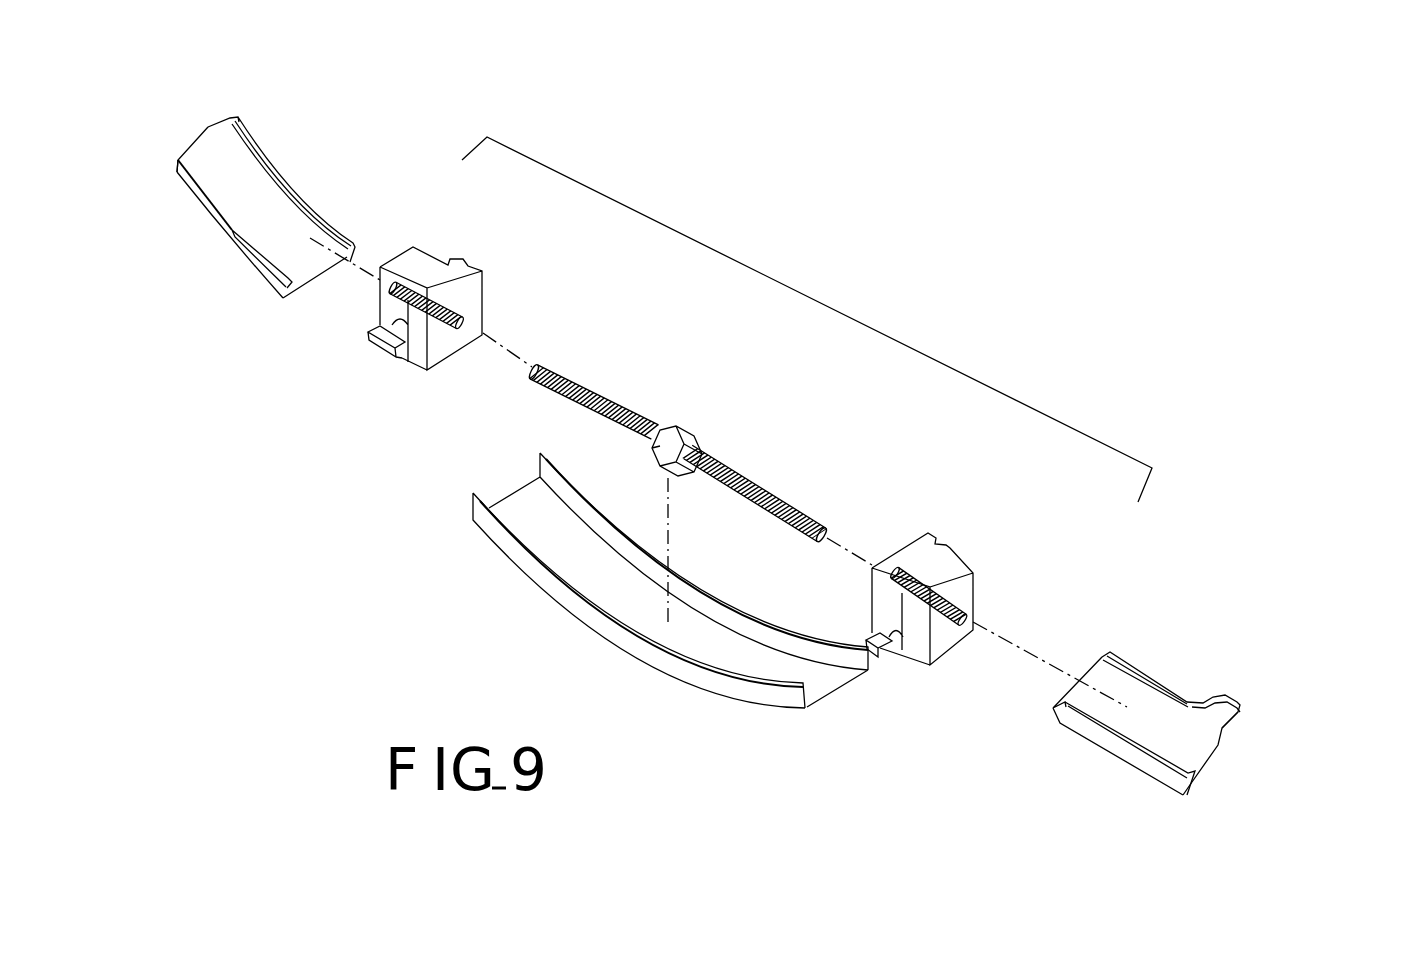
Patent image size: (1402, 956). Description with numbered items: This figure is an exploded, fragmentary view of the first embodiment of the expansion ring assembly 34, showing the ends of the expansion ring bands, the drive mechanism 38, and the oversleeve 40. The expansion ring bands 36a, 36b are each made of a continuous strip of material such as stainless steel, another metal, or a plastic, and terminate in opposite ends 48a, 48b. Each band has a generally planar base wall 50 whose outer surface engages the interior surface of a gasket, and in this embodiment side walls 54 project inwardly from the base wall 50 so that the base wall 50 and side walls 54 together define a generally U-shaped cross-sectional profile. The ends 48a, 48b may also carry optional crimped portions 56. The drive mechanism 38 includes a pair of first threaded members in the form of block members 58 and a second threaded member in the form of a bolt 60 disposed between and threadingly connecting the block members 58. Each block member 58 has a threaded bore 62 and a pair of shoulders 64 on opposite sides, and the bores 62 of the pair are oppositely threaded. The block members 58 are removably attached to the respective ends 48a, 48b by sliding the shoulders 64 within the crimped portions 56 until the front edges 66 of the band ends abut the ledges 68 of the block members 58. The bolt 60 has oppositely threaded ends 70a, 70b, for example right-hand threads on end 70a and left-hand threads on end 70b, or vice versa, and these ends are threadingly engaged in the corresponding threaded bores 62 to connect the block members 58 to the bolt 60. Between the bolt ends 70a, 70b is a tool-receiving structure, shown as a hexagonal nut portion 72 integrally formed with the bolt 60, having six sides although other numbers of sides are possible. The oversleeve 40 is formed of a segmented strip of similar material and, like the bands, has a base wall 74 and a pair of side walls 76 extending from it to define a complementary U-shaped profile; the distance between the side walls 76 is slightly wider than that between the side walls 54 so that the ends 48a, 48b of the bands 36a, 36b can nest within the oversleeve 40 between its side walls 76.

The expansion ring assembly 34 is at (807, 318).
The expansion ring band 36a is at (297, 155).
The expansion ring band 36b is at (1227, 704).
The drive mechanism 38 is at (826, 308).
The oversleeve 40 is at (667, 589).
The end of expansion ring band 48a is at (260, 112).
The end of expansion ring band 48b is at (1250, 690).
The base wall 50 is at (226, 199).
The side walls 54 is at (263, 156).
The crimped portions 56 is at (327, 225).
The block members 58 is at (488, 275).
The bolt 60 is at (651, 455).
The threaded bore 62 is at (370, 308).
The shoulders 64 is at (388, 340).
The front edges 66 is at (312, 285).
The ledges 68 is at (403, 343).
The bolt end 70a is at (533, 378).
The bolt end 70b is at (793, 533).
The hexagonal nut portion 72 is at (675, 437).
The base wall 74 is at (537, 548).
The side walls 76 is at (583, 515).